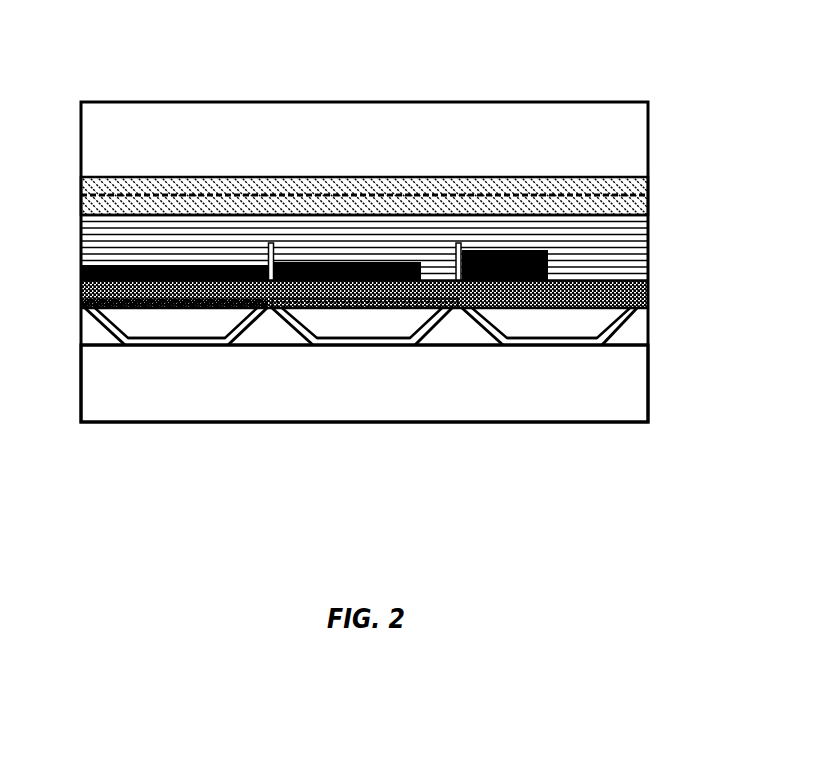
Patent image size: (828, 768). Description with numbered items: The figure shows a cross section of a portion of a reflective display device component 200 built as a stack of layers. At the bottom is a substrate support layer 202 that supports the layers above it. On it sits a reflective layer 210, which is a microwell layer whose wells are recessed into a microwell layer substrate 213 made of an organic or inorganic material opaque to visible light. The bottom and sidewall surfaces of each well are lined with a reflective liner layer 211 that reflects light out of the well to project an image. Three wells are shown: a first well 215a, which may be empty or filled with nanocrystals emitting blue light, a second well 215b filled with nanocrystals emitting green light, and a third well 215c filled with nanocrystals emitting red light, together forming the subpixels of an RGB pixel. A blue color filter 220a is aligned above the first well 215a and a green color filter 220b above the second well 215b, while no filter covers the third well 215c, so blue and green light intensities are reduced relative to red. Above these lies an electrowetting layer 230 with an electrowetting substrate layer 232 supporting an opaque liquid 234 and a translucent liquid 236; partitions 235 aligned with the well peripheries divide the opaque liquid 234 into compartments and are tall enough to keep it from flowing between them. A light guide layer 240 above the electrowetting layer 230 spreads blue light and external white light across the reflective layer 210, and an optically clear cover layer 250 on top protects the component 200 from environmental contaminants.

The reflective display device component 200 is at (123, 17).
The substrate support layer 202 is at (648, 393).
The reflective layer 210 is at (668, 328).
The reflective liner layer 211 is at (167, 338).
The microwell layer substrate 213 is at (270, 336).
The first well 215a is at (176, 323).
The second well 215b is at (362, 323).
The third well 215c is at (551, 323).
The blue color filter 220a is at (84, 303).
The green color filter 220b is at (393, 306).
The electrowetting layer 230 is at (668, 275).
The electrowetting substrate layer 232 is at (88, 296).
The opaque liquid 234 is at (88, 272).
The partitions 235 is at (271, 243).
The translucent liquid 236 is at (88, 238).
The light guide layer 240 is at (650, 197).
The cover layer 250 is at (648, 147).